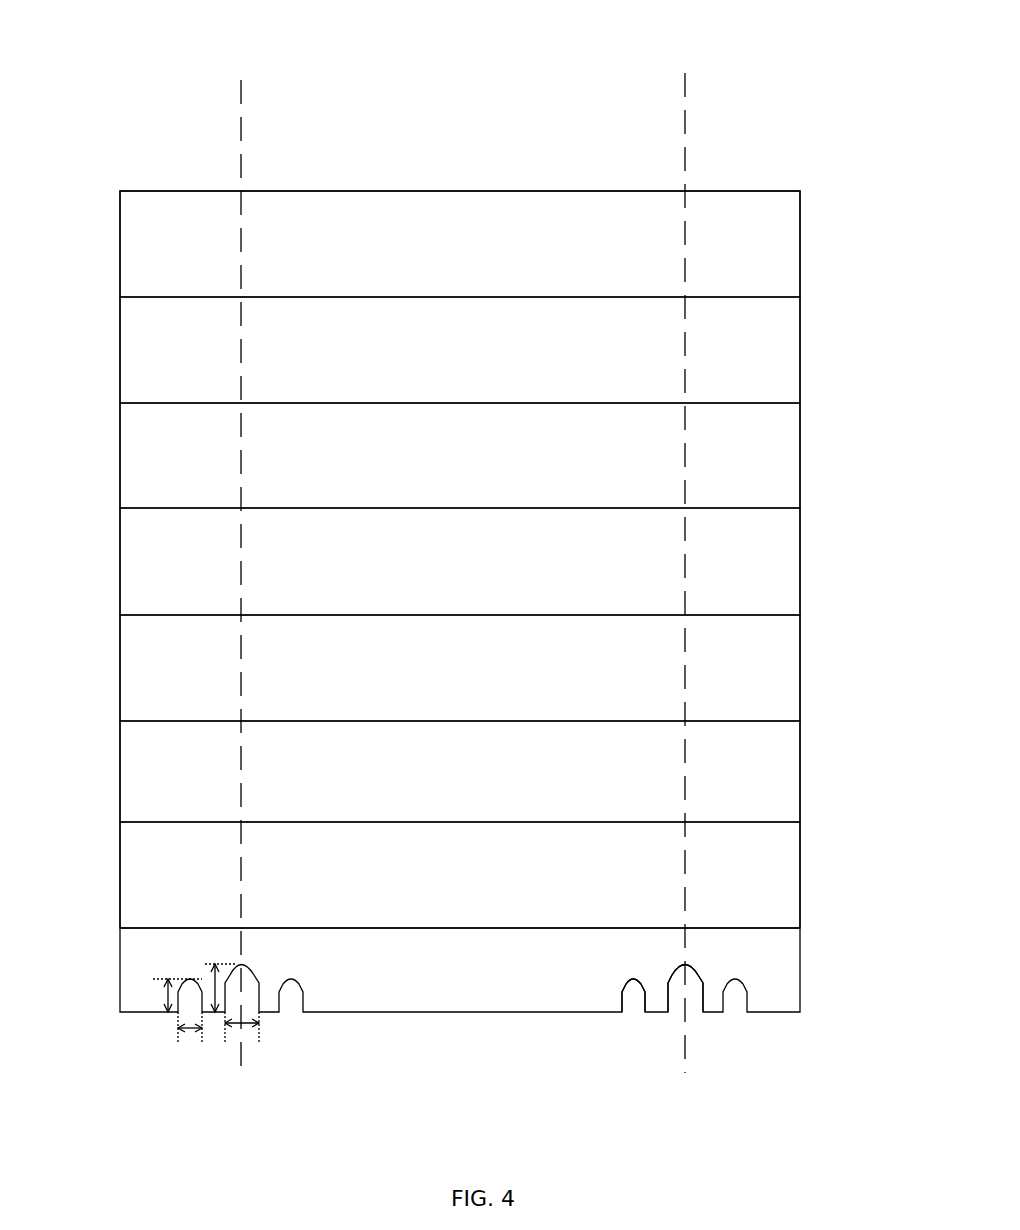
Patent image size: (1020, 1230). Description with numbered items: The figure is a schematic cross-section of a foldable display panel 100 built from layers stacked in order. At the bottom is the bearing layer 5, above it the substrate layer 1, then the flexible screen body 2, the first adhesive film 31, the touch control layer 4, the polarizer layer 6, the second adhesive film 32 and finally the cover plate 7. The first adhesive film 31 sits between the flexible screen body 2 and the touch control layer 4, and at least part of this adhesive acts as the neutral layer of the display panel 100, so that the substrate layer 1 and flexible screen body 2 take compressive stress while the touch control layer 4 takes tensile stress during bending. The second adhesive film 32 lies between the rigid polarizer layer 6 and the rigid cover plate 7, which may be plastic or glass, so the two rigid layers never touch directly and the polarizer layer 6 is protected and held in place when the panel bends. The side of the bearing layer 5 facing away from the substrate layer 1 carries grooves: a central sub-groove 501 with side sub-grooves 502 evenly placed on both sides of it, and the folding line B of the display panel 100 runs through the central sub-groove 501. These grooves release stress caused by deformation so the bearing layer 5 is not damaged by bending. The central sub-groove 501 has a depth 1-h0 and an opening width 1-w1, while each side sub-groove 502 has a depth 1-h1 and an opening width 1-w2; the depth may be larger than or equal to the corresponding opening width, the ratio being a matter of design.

The display panel 100 is at (432, 82).
The folding line B is at (683, 553).
The cover plate 7 is at (770, 273).
The second adhesive film 32 is at (769, 375).
The polarizer layer 6 is at (776, 487).
The touch control layer 4 is at (769, 580).
The first adhesive film 31 is at (777, 687).
The flexible screen body 2 is at (777, 803).
The substrate layer 1 is at (783, 910).
The bearing layer 5 is at (783, 985).
The central sub-groove 501 is at (696, 1005).
The side sub-groove 502 is at (630, 998).
The depth of the central sub-groove 1-h0 is at (213, 973).
The depth of the side sub-groove 1-h1 is at (167, 1002).
The width of the opening of the central sub-groove 1-w1 is at (243, 1028).
The width of the opening of the side sub-groove 1-w2 is at (192, 1040).